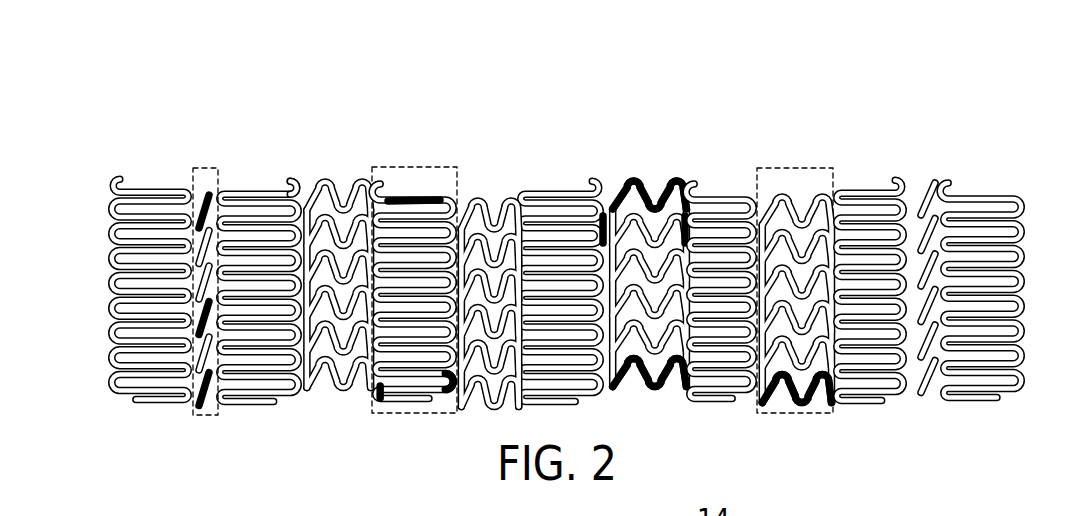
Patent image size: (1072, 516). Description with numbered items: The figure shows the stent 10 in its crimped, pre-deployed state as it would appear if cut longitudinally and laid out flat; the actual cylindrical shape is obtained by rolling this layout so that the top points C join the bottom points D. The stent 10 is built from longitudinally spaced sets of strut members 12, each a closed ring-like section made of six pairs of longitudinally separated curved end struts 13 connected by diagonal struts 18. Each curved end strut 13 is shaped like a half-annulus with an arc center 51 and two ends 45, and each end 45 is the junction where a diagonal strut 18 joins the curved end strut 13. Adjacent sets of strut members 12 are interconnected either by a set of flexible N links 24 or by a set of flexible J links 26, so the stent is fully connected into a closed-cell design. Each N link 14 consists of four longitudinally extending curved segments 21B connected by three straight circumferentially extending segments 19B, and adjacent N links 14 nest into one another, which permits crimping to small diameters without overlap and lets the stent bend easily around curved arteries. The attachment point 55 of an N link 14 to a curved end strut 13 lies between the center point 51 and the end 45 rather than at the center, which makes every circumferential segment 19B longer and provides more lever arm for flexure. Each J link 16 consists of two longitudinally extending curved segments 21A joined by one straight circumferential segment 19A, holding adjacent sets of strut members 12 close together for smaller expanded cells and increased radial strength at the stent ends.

The stent 10 is at (477, 86).
The set of strut members 12 is at (443, 167).
The curved end strut 13 is at (444, 392).
The N link 14 is at (777, 413).
The J link 16 is at (207, 170).
The diagonal strut 18 is at (418, 197).
The straight circumferential segment 19A is at (203, 320).
The straight circumferentially extending segment 19B is at (652, 383).
The longitudinally extending curved segment 21A is at (220, 408).
The longitudinally extending curved segment 21B is at (673, 177).
The set of flexible N links 24 is at (805, 167).
The set of flexible J links 26 is at (208, 190).
The end of curved end strut 45 is at (258, 185).
The arc center of curved end strut 51 is at (287, 185).
The attachment point 55 is at (375, 190).
The top points C is at (957, 190).
The bottom points D is at (896, 397).